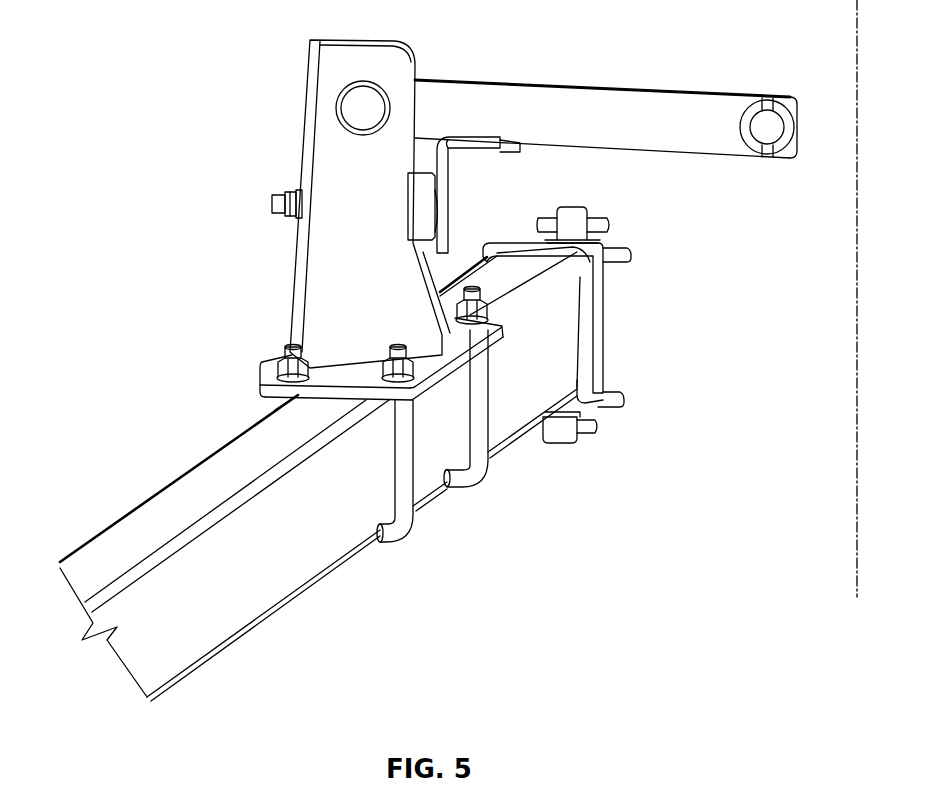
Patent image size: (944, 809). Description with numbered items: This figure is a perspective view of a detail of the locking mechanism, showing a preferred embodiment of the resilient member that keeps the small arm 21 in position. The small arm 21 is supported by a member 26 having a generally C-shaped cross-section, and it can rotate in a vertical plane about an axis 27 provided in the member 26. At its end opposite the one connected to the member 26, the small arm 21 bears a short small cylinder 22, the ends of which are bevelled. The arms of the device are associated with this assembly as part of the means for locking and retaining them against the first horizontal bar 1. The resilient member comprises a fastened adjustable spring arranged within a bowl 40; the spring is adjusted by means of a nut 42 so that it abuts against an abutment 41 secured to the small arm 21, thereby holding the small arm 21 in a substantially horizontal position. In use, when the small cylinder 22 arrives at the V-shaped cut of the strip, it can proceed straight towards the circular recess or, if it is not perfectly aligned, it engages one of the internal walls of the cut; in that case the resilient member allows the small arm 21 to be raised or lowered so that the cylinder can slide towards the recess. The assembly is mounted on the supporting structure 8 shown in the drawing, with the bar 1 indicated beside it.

The first horizontal bar 1 is at (858, 423).
The carrier rail 8 is at (268, 542).
The small arm 21 is at (640, 123).
The short small cylinder 22 is at (767, 128).
The member 26 is at (342, 246).
The axis 27 is at (337, 120).
The bowl 40 is at (413, 193).
The abutment 41 is at (473, 157).
The nut 42 is at (272, 200).